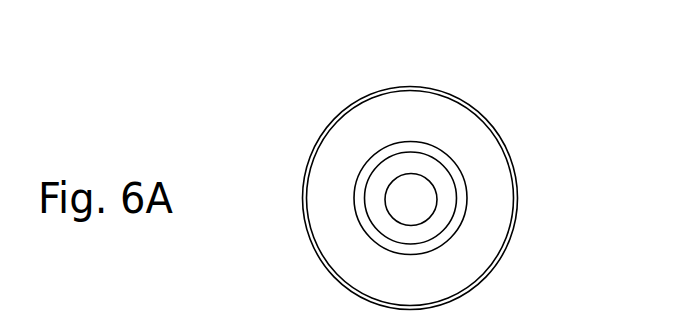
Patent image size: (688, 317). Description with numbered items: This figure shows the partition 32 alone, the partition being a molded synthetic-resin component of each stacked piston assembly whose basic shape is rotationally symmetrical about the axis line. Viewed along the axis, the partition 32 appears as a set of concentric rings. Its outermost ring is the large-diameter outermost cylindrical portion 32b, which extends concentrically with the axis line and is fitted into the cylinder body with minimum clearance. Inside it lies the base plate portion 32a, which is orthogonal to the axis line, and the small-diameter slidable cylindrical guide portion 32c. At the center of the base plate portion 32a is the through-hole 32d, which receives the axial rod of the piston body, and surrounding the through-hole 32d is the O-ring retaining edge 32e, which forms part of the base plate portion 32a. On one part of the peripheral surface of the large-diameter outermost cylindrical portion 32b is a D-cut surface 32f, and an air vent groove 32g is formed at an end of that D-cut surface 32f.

The partition 32 is at (487, 95).
The base plate portion 32a is at (388, 117).
The large-diameter outermost cylindrical portion 32b is at (322, 137).
The small-diameter slidable cylindrical guide portion 32c is at (447, 164).
The through-hole 32d is at (428, 208).
The O-ring retaining edge 32e is at (378, 212).
The D-cut surface 32f is at (515, 178).
The air vent groove 32g is at (518, 196).